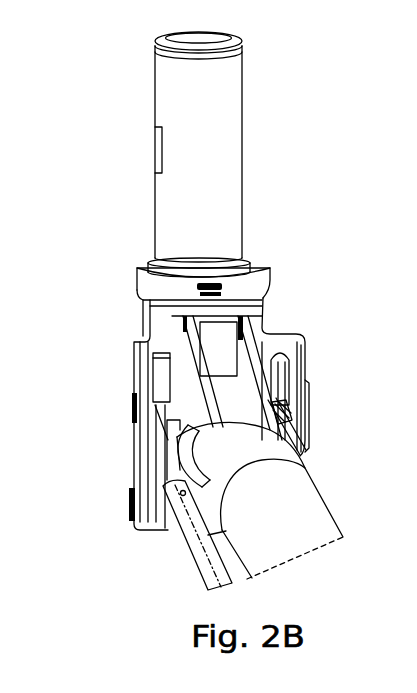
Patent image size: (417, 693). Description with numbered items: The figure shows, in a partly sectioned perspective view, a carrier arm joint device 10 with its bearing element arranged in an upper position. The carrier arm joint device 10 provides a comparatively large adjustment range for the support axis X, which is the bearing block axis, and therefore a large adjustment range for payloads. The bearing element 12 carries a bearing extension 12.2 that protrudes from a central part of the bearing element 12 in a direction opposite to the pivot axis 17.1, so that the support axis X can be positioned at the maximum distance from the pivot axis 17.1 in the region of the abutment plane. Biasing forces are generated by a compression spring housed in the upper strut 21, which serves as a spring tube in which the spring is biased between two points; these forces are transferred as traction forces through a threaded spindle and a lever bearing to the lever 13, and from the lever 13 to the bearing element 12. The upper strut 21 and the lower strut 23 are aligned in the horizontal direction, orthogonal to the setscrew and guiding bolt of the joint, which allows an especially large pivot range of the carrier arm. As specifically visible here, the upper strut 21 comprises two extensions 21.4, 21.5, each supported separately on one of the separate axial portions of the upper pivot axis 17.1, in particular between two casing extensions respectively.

The carrier arm joint device 10 is at (122, 326).
The bearing element 12 is at (257, 280).
The bearing extension 12.2 is at (221, 333).
The lever 13 is at (202, 388).
The support axis X is at (253, 372).
The upper pivot axis 17.1 is at (128, 447).
The upper strut 21 is at (295, 519).
The extension of the upper strut 21.4 is at (170, 449).
The extension of the upper strut 21.5 is at (285, 416).
The lower strut 23 is at (201, 560).